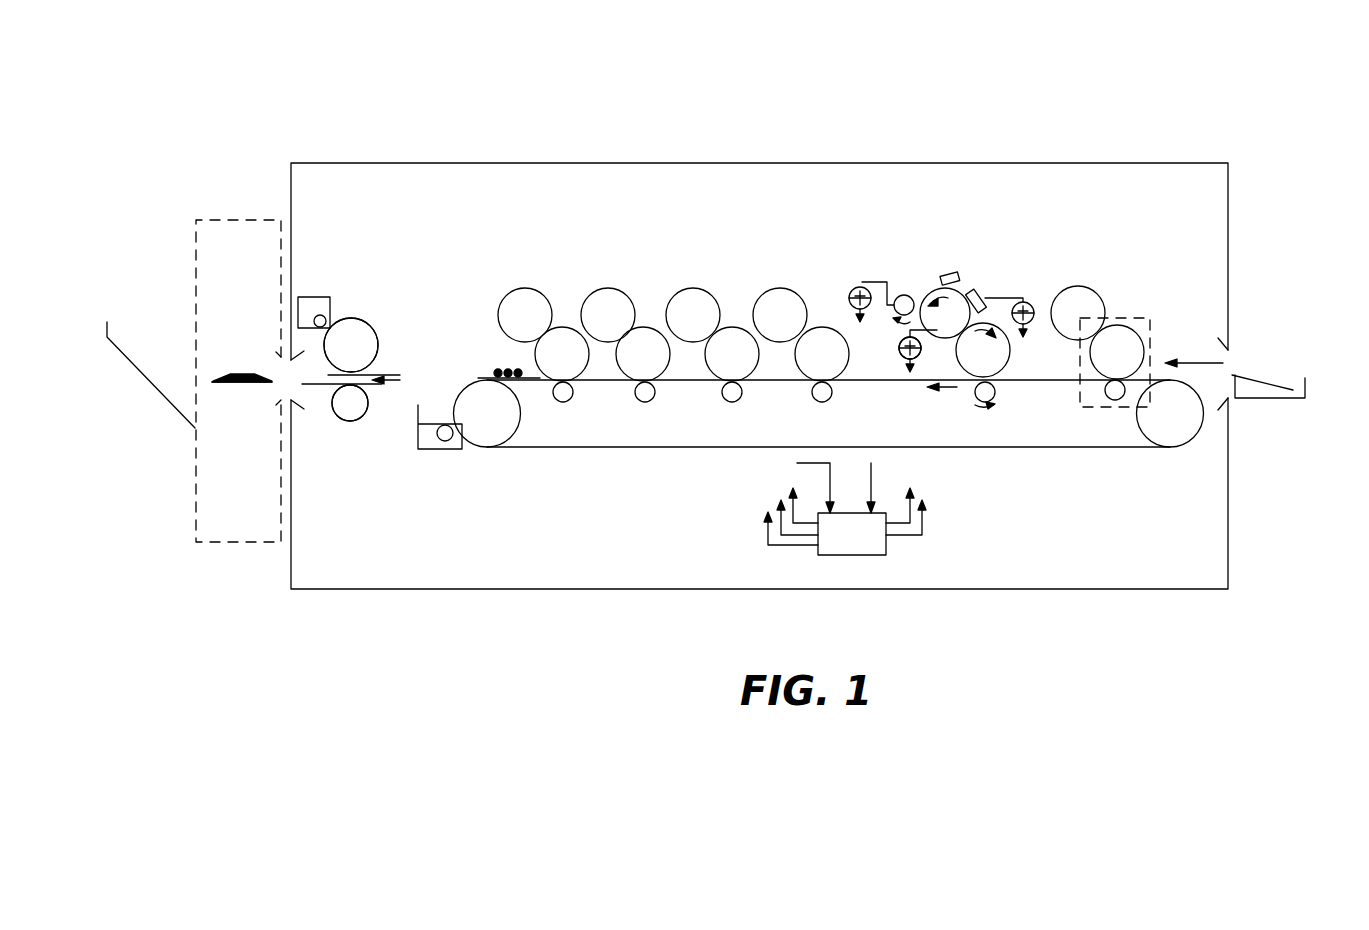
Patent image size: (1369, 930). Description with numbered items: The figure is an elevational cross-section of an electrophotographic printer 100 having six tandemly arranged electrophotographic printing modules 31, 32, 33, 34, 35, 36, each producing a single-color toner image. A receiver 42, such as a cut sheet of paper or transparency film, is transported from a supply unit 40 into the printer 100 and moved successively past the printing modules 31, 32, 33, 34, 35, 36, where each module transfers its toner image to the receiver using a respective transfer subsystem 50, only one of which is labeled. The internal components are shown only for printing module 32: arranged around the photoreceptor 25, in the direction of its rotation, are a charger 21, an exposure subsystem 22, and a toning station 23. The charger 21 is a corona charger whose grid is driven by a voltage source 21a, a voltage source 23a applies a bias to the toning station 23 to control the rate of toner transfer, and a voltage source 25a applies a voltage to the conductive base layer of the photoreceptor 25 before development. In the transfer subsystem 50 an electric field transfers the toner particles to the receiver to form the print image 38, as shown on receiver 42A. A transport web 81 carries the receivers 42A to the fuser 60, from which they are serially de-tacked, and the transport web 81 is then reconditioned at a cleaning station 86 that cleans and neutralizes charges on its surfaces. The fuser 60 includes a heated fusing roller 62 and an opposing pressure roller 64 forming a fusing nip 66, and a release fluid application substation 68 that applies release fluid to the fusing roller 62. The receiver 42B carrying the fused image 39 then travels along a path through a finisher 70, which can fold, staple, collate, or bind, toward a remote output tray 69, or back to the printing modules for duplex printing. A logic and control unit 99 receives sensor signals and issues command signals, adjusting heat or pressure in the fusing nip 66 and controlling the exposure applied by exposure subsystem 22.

The electrophotographic printer 100 is at (961, 111).
The finisher 70 is at (227, 542).
The output tray 69 is at (144, 375).
The fused image 39 is at (242, 379).
The receiver 42B is at (270, 383).
The release fluid application substation 68 is at (302, 297).
The fuser 60 is at (375, 299).
The fusing roller 62 is at (379, 340).
The pressure roller 64 is at (350, 421).
The fusing nip 66 is at (402, 376).
The cleaning station 86 is at (430, 450).
The transport web 81 is at (1052, 447).
The receiver 42A is at (512, 402).
The print image 38 is at (509, 369).
The printing module 36 is at (524, 280).
The printing module 35 is at (607, 280).
The printing module 34 is at (694, 280).
The printing module 33 is at (782, 280).
The printing module 32 is at (901, 243).
The exposure subsystem 22 is at (952, 225).
The toning station 23 is at (904, 295).
The voltage source 23a is at (858, 287).
The charger 21 is at (980, 291).
The voltage source 21a is at (1030, 322).
The photoreceptor 25 is at (926, 335).
The voltage source 25a is at (900, 358).
The printing module 31 is at (1077, 279).
The transfer subsystem 50 is at (1117, 409).
The receiver 42 is at (1292, 390).
The supply unit 40 is at (1268, 412).
The logic and control unit (LCU) 99 is at (865, 555).